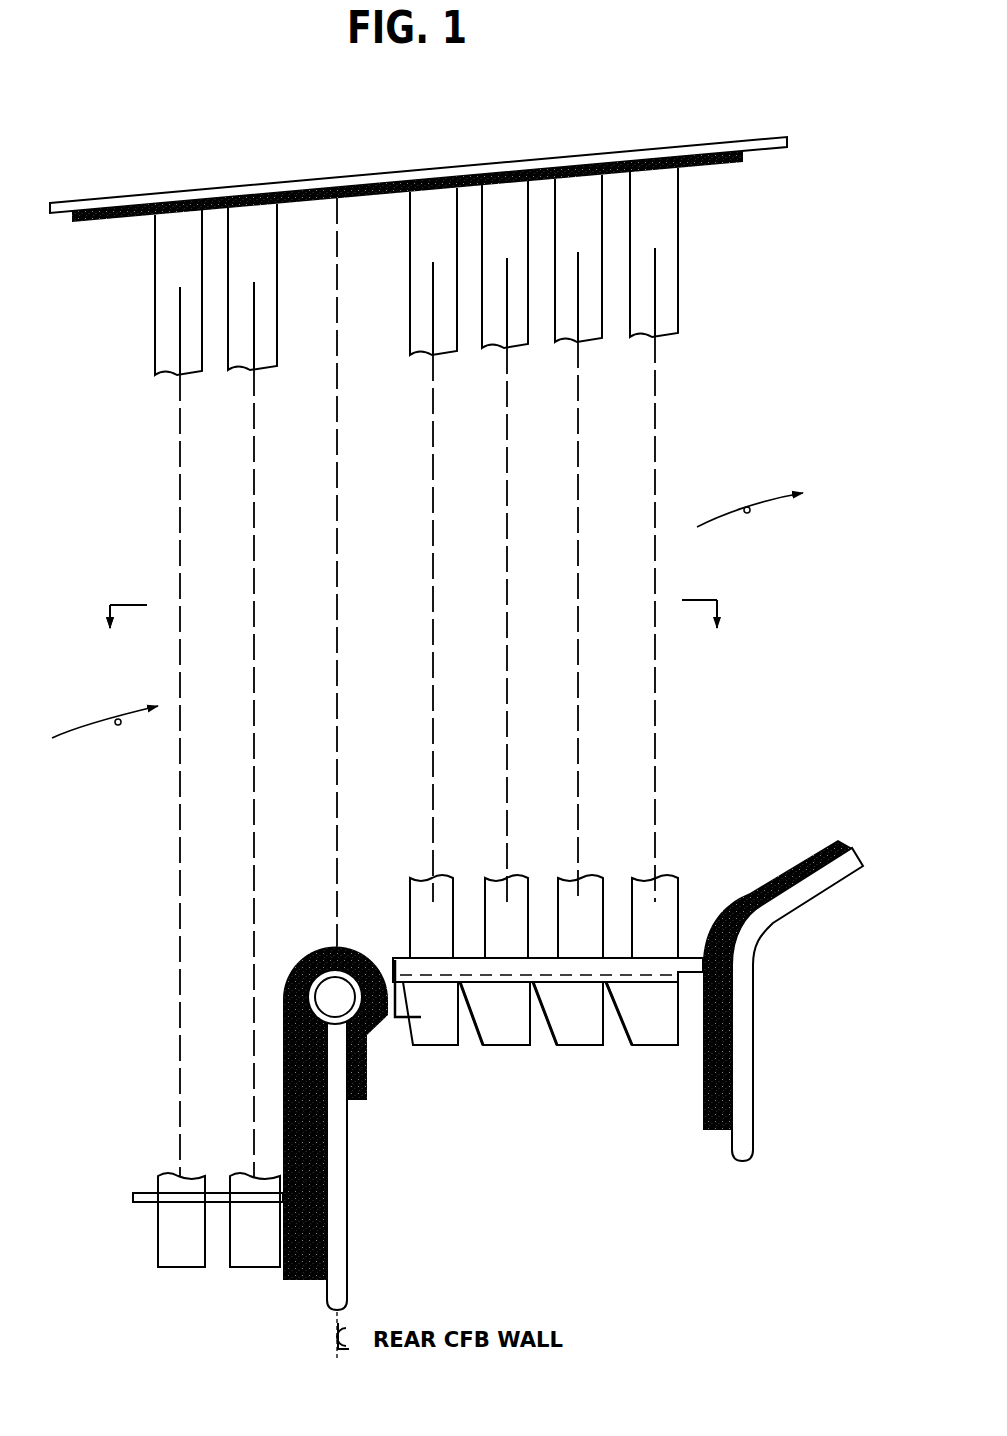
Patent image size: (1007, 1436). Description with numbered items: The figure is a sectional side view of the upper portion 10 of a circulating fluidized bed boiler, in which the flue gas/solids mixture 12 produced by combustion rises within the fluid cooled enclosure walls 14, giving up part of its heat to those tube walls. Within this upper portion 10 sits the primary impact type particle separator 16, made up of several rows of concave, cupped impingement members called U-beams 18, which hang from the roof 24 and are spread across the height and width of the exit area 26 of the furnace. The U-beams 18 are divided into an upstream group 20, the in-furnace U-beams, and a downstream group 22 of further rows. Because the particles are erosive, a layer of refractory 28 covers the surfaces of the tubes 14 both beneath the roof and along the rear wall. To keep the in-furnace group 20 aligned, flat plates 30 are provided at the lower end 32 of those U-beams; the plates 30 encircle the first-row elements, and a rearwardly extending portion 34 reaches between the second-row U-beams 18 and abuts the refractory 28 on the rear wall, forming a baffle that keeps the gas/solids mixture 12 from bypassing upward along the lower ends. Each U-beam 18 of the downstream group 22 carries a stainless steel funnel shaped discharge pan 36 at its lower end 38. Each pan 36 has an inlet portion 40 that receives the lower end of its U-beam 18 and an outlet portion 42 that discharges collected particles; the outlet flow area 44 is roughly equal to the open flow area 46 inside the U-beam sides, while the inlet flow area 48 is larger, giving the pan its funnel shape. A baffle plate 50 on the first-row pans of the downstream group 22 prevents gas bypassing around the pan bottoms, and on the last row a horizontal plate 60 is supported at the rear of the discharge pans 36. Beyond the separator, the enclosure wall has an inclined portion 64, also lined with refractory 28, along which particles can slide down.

The upper portion 10 is at (133, 516).
The flue gas/solids mixture 12 is at (748, 506).
The fluid cooled enclosure walls 14 is at (255, 186).
The primary impact type particle separator 16 is at (368, 395).
The U-beams 18 is at (462, 304).
The upstream group 20 is at (278, 290).
The downstream group 22 is at (688, 261).
The roof 24 is at (452, 146).
The exit area 26 is at (305, 629).
The refractory 28 is at (288, 208).
The flat plates 30 is at (148, 1193).
The lower end 32 is at (219, 1227).
The rearwardly extending portion 34 is at (246, 1195).
The funnel shaped discharge pan 36 is at (447, 1013).
The lower ends 38 is at (445, 937).
The inlet portion 40 is at (458, 960).
The outlet portion 42 is at (447, 1035).
The outlet flow area 44 is at (437, 1051).
The open flow area 46 is at (422, 892).
The inlet flow area 48 is at (412, 955).
The baffle plate 50 is at (395, 960).
The horizontal plate 60 is at (692, 957).
The inclined portion 64 is at (830, 804).